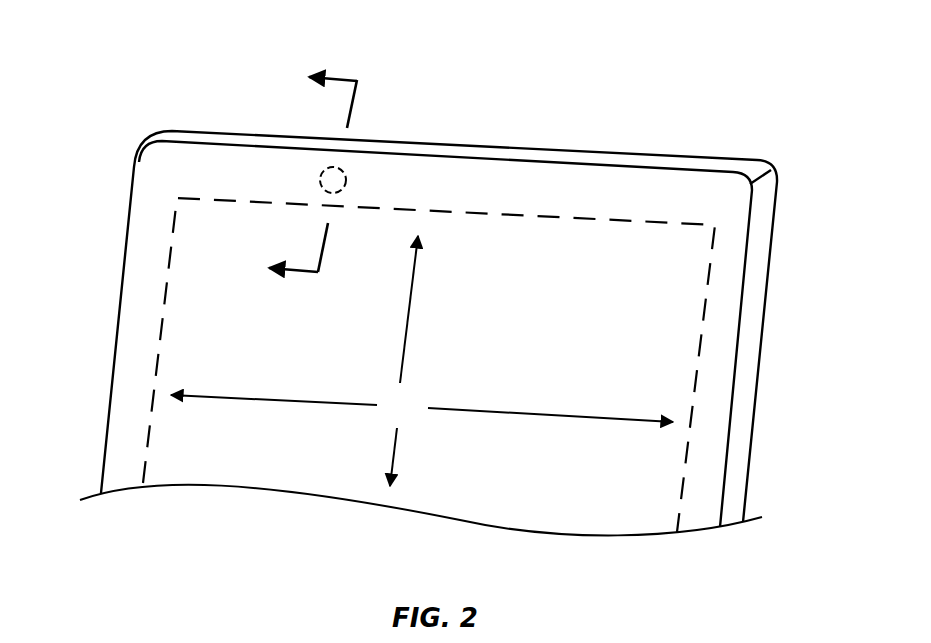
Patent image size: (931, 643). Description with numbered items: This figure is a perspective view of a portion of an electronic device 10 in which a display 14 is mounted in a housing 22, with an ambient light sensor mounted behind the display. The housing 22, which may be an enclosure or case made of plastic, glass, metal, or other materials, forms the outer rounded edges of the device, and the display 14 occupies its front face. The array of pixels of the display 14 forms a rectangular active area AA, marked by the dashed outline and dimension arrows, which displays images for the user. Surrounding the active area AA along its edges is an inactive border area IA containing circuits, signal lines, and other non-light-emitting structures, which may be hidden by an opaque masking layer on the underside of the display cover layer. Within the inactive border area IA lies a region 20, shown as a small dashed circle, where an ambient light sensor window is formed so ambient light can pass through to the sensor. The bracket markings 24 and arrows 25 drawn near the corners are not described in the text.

The electronic device 10 is at (584, 84).
The display 14 is at (400, 228).
The region 20 is at (343, 168).
The housing 22 is at (752, 167).
The corner bracket of display region 24 is at (351, 108).
The arrow indicating direction 25 is at (338, 76).
The inactive border area IA is at (675, 185).
The active area AA is at (422, 361).